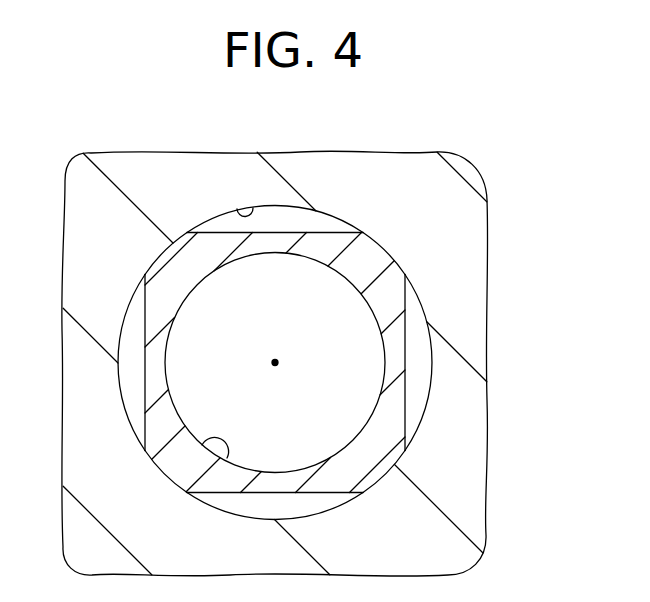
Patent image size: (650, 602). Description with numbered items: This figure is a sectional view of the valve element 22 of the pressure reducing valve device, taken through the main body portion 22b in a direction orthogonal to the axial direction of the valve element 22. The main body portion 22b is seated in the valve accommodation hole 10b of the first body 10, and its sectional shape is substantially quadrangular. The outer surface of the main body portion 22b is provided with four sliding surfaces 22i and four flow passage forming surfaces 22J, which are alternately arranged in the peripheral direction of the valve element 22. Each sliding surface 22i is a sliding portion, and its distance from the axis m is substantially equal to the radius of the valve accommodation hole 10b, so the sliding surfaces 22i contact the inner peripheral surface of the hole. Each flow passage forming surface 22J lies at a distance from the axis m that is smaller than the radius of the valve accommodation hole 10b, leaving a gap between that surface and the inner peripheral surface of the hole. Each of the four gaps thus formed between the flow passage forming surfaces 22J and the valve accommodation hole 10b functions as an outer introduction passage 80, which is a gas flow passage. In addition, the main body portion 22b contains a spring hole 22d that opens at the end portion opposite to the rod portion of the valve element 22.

The first body 10 is at (397, 152).
The valve accommodation hole 10b is at (243, 205).
The valve element 22 is at (388, 291).
The main body portion 22b is at (390, 348).
The spring hole 22d is at (221, 459).
The sliding surface 22i is at (158, 257).
The flow passage forming surface 22J is at (293, 232).
The outer introduction passage 80 is at (130, 312).
The axis m is at (275, 366).